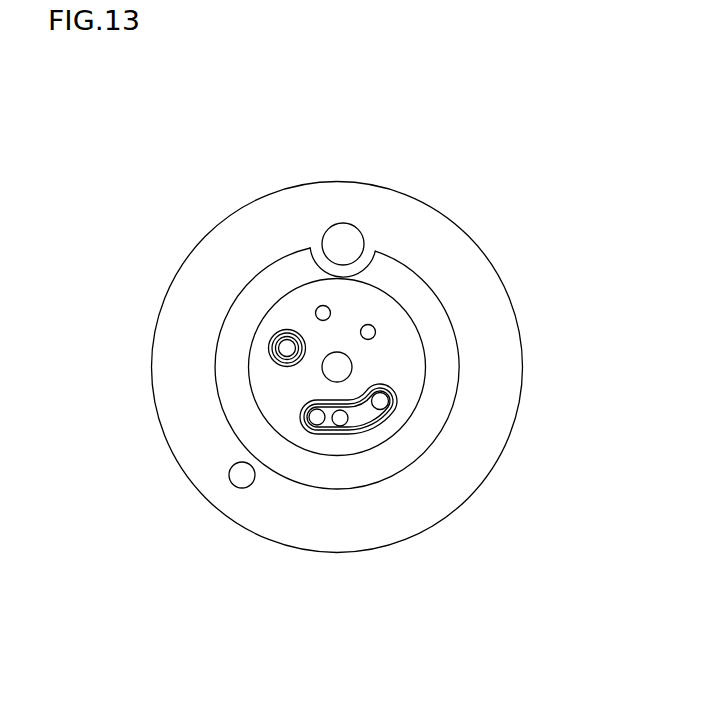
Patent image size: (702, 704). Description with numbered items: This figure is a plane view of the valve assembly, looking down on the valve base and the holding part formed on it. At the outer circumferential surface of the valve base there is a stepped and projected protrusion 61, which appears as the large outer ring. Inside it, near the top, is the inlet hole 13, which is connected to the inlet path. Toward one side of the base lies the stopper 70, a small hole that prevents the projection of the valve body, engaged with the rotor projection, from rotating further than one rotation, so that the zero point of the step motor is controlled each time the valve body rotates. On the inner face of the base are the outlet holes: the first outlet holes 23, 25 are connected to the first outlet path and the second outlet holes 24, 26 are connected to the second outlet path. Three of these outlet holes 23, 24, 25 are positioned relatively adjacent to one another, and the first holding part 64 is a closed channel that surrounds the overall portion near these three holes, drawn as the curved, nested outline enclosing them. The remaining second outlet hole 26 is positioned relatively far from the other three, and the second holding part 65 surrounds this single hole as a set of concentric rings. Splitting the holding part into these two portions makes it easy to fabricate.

The inlet hole 13 is at (358, 229).
The protrusion 61 is at (442, 372).
The second outlet hole 26 is at (262, 360).
The second holding part 65 is at (278, 331).
The stopper 70 is at (240, 477).
The first holding part 64 is at (380, 424).
The first outlet hole 23 is at (311, 442).
The second outlet hole 24 is at (357, 442).
The first outlet hole 25 is at (409, 404).